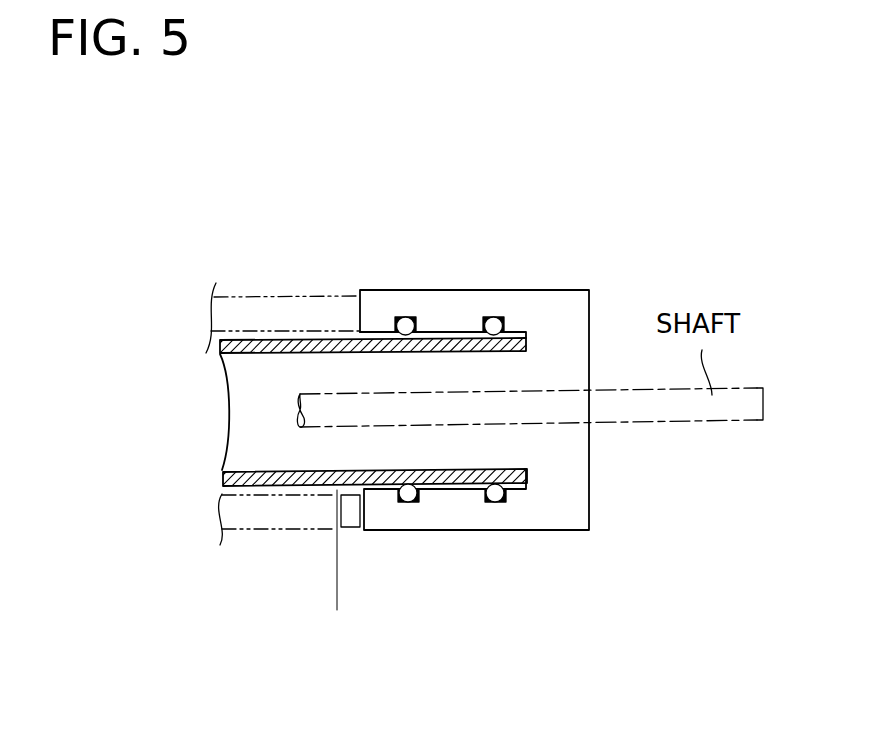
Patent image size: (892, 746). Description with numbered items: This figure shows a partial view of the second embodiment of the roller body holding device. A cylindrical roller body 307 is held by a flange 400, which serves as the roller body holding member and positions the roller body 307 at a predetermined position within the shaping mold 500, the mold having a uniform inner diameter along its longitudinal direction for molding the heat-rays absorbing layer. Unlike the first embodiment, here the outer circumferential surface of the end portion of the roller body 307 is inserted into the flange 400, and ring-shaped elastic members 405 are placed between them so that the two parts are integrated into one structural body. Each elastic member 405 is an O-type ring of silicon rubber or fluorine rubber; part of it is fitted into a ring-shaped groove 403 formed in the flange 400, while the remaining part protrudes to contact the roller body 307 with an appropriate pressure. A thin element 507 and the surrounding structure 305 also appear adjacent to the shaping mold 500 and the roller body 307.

The cylindrical tube / liner 305 is at (318, 361).
The roller body 307 is at (286, 342).
The flange 400 is at (547, 515).
The ring-shaped groove 403 is at (495, 502).
The ring-shaped elastic member 405 is at (493, 326).
The shaping mold 500 is at (273, 515).
The thin plate / washer 507 is at (338, 597).